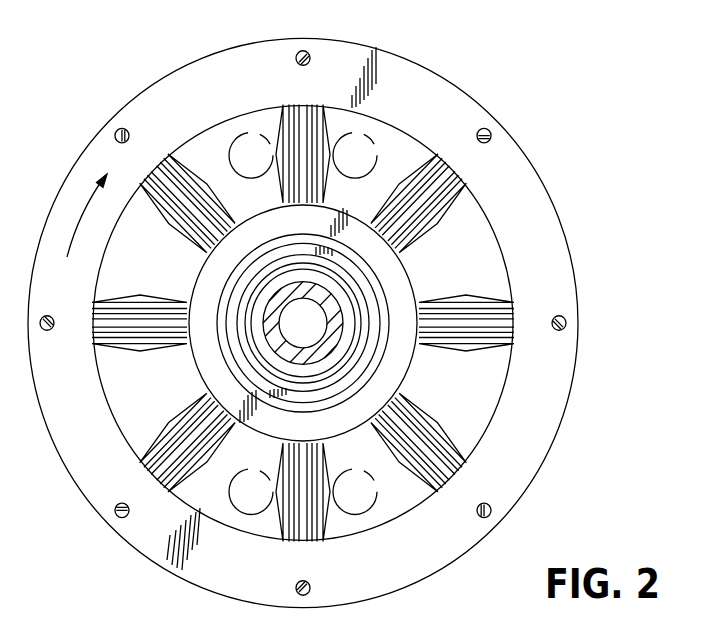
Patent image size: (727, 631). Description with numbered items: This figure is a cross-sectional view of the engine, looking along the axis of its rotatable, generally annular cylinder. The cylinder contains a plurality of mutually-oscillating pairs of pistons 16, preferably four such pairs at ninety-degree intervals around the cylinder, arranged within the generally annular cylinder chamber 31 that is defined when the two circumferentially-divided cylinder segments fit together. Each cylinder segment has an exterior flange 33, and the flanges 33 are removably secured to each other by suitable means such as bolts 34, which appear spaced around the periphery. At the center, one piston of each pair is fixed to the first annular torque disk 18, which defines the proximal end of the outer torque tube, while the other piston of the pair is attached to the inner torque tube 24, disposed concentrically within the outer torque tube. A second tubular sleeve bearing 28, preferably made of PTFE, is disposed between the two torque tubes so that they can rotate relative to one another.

The pistons 16 is at (173, 225).
The first annular torque disk 18 is at (390, 360).
The inner torque tube 24 is at (327, 342).
The second tubular sleeve bearing 28 is at (317, 383).
The annular cylinder chamber 31 is at (165, 280).
The exterior flange 33 is at (217, 78).
The bolts 34 is at (118, 131).